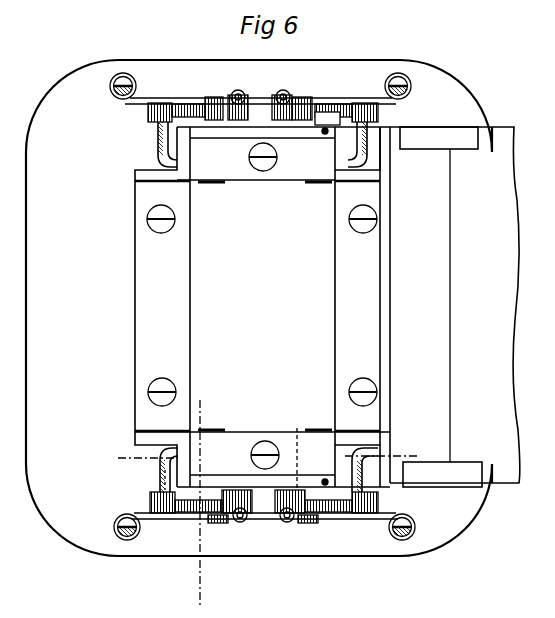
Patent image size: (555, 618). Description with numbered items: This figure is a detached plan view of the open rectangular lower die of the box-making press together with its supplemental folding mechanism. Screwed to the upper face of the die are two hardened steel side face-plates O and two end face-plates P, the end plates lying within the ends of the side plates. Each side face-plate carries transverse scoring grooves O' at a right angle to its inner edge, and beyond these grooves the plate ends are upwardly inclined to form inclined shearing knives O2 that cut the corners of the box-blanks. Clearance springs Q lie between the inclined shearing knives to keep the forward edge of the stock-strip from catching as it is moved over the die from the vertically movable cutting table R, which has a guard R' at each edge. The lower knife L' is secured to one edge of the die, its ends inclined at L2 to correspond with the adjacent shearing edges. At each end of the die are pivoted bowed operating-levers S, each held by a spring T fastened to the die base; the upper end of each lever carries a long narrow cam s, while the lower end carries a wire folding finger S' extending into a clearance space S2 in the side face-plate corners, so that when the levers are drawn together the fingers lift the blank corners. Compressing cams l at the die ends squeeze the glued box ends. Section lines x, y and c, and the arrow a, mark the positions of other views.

The spring T is at (165, 103).
The bowed operating-lever S is at (262, 310).
The cam s is at (275, 102).
The folding finger S' is at (271, 309).
The clearance space S2 is at (163, 462).
The inclined shearing knife O2 is at (182, 160).
The clearance spring Q is at (242, 132).
The end face-plate P is at (274, 306).
The side face-plate O is at (257, 307).
The scoring groove O' is at (249, 306).
The compressing cam l is at (320, 430).
The lower knife L' is at (403, 305).
The inclined end of the lower knife L2 is at (394, 149).
The cutting table R is at (455, 305).
The guard R' is at (441, 307).
The arrow a is at (327, 298).
The section line x- x is at (267, 457).
The section line y- y is at (196, 497).
The section line c-d c is at (299, 446).